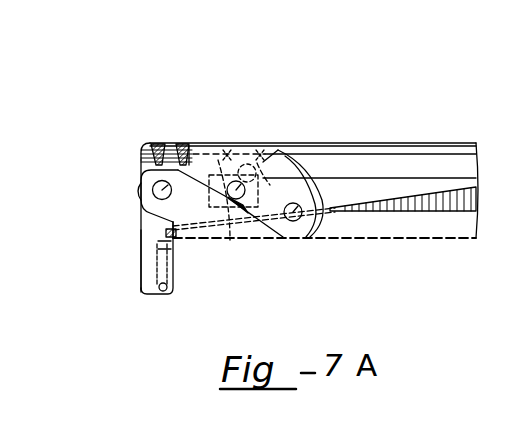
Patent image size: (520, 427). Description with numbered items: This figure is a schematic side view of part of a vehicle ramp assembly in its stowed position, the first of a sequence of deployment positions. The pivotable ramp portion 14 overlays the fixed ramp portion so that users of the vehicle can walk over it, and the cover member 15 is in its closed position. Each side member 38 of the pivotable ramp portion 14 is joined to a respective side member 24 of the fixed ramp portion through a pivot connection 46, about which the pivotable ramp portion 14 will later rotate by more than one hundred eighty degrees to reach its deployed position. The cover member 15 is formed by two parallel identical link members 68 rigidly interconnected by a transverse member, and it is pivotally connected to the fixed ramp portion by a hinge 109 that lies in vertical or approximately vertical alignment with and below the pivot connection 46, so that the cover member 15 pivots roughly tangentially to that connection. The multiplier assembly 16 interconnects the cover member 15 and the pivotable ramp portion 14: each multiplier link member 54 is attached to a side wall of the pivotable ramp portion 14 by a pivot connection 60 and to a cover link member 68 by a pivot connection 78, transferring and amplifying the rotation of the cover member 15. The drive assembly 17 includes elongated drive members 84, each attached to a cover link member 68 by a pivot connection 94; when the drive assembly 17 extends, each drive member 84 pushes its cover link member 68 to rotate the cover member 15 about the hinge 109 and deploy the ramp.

The pivotable ramp portion 14 is at (141, 192).
The cover member 15 is at (141, 245).
The multiplier assembly 16 is at (256, 143).
The drive assembly 17 is at (418, 177).
The side members 24 is at (183, 145).
The side members 38 is at (145, 143).
The pivot connection 46 is at (141, 178).
The link members 54 is at (224, 152).
The pivot connection 60 is at (278, 143).
The link members 68 is at (148, 262).
The pivot connection 78 is at (291, 221).
The drive members 84 is at (386, 191).
The pivot connection 94 is at (228, 200).
The hinge 109 is at (175, 287).